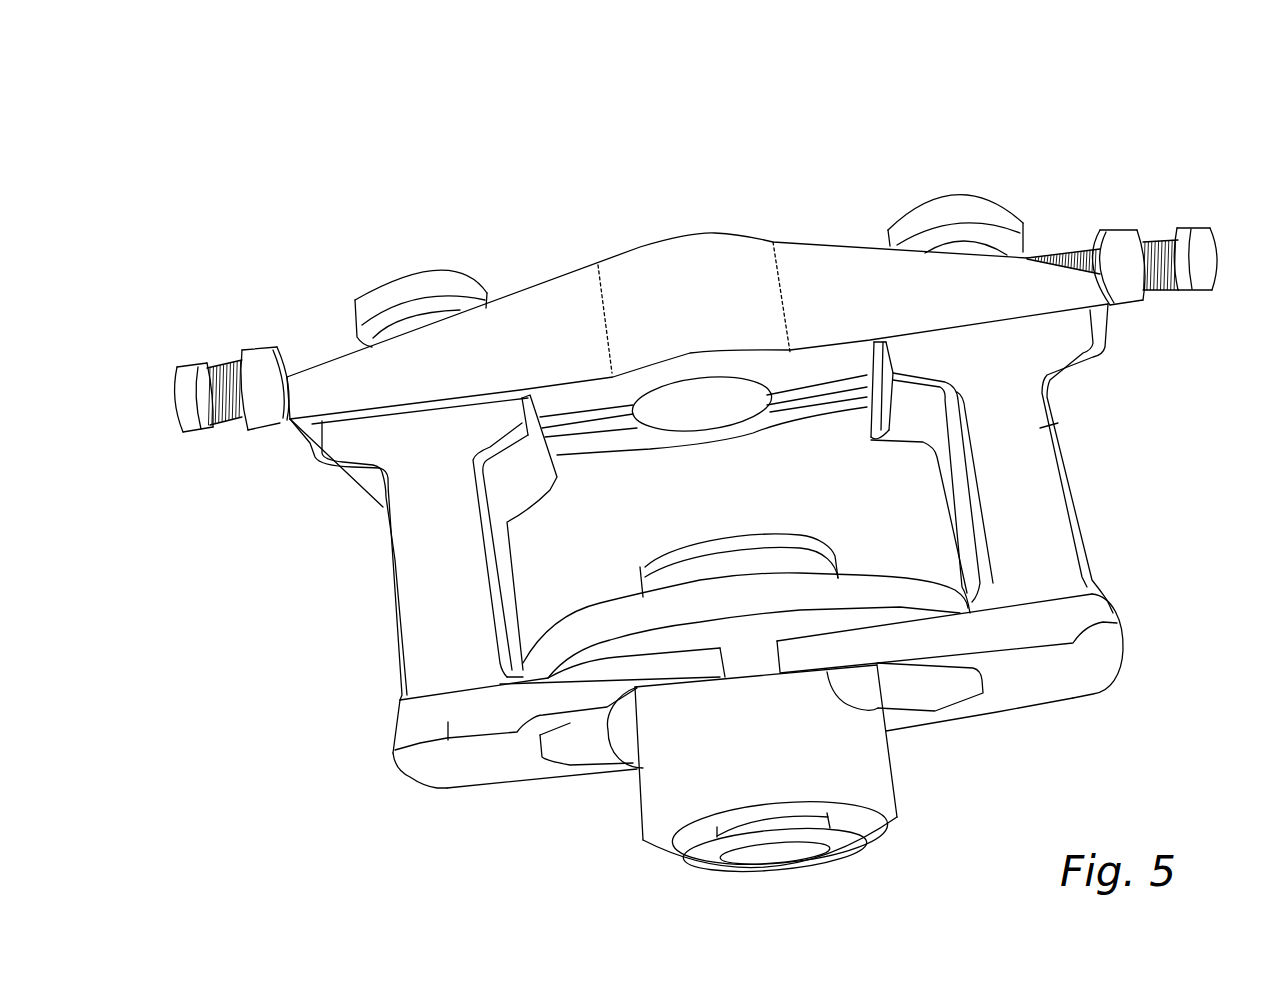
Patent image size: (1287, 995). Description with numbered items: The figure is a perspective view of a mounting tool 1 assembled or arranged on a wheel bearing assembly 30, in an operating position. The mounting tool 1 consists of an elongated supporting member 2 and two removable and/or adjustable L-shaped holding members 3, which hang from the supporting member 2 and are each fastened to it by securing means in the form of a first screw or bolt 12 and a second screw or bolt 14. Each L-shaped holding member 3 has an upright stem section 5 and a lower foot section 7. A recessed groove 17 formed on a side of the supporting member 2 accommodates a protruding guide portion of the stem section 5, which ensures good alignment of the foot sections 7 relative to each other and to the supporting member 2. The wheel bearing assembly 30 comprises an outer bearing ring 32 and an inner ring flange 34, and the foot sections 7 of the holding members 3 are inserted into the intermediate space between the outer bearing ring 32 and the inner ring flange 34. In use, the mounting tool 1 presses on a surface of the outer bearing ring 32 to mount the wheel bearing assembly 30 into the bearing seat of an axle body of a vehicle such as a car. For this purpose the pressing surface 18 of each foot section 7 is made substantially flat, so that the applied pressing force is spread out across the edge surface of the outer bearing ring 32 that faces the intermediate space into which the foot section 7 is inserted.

The mounting tool 1 is at (707, 495).
The supporting member 2 is at (731, 232).
The L-shaped holding member 3 is at (739, 566).
The stem section 5 is at (433, 530).
The foot section 7 is at (449, 742).
The first screw or bolt 12 is at (400, 290).
The second screw or bolt 14 is at (182, 388).
The recessed groove 17 is at (827, 380).
The pressing surface 18 is at (672, 687).
The wheel bearing assembly 30 is at (826, 784).
The outer bearing ring 32 is at (848, 780).
The inner ring flange 34 is at (862, 590).